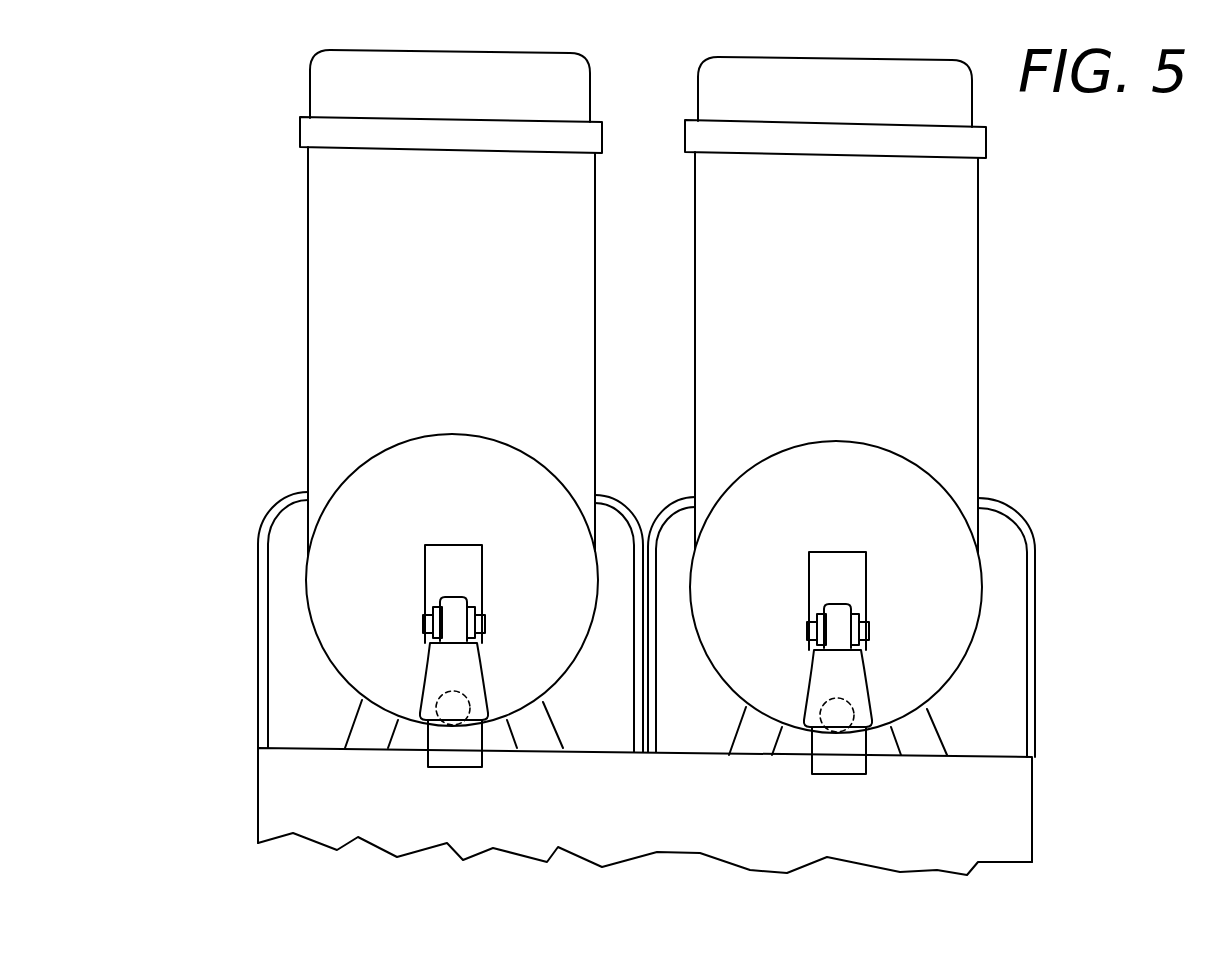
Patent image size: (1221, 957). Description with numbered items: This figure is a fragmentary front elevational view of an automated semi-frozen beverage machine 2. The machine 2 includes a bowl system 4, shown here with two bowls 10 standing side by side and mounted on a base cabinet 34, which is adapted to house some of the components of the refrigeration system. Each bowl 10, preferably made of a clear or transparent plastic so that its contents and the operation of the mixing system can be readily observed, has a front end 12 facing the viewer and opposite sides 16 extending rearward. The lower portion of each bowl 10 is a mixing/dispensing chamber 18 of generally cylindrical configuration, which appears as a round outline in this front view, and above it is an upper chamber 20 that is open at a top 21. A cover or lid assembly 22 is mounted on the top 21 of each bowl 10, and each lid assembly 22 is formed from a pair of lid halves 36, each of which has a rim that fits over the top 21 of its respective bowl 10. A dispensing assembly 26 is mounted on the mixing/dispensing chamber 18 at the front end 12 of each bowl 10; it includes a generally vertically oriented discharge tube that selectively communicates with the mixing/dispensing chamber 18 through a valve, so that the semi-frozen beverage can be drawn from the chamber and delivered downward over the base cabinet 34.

The automated semi-frozen beverage machine 2 is at (250, 117).
The bowl system 4 is at (250, 201).
The bowl 10 is at (694, 297).
The front end 12 is at (470, 316).
The opposite sides 16 is at (694, 357).
The mixing/dispensing chamber 18 is at (737, 698).
The upper chamber 20 is at (777, 450).
The top 21 is at (698, 98).
The cover or lid assembly 22 is at (703, 62).
The dispensing assembly 26 is at (425, 546).
The base cabinet 34 is at (987, 817).
The lid half 36 is at (926, 110).